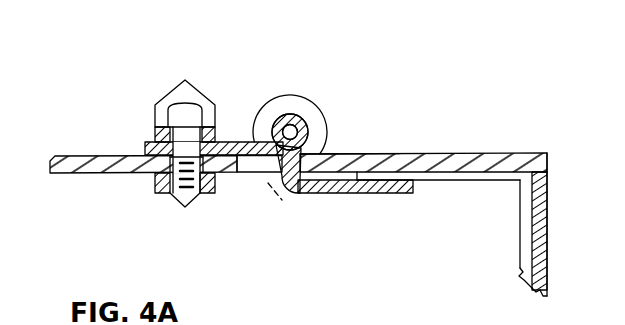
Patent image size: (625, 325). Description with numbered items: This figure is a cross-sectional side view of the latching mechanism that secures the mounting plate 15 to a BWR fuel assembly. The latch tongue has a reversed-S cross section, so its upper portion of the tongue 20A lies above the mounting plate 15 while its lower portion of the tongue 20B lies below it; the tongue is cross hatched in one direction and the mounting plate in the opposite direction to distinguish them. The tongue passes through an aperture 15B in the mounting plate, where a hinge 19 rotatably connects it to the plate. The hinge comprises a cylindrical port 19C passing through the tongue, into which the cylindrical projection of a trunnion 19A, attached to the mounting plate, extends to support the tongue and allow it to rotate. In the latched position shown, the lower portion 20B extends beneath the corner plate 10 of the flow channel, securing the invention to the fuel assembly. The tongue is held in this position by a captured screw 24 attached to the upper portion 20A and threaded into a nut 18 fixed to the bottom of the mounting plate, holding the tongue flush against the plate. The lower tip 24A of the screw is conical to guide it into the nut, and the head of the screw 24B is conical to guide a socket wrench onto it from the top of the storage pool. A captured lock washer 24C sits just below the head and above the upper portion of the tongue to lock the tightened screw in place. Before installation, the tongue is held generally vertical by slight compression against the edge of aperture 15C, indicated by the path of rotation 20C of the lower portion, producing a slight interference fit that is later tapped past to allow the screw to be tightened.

The corner plate 10 is at (458, 183).
The mounting plate 15 is at (298, 166).
The aperture 15B is at (320, 156).
The edge of aperture 15C is at (233, 170).
The nut 18 is at (153, 182).
The hinge 19 is at (340, 91).
The trunnion 19A is at (280, 99).
The cylindrical port 19C is at (308, 125).
The upper portion of the tongue 20A is at (232, 142).
The lower portion of the tongue 20B is at (370, 195).
The path of rotation 20C is at (255, 173).
The captured screw 24 is at (122, 142).
The lower tip of screw 24A is at (185, 207).
The head of the screw 24B is at (173, 88).
The captured lock washer 24C is at (153, 133).